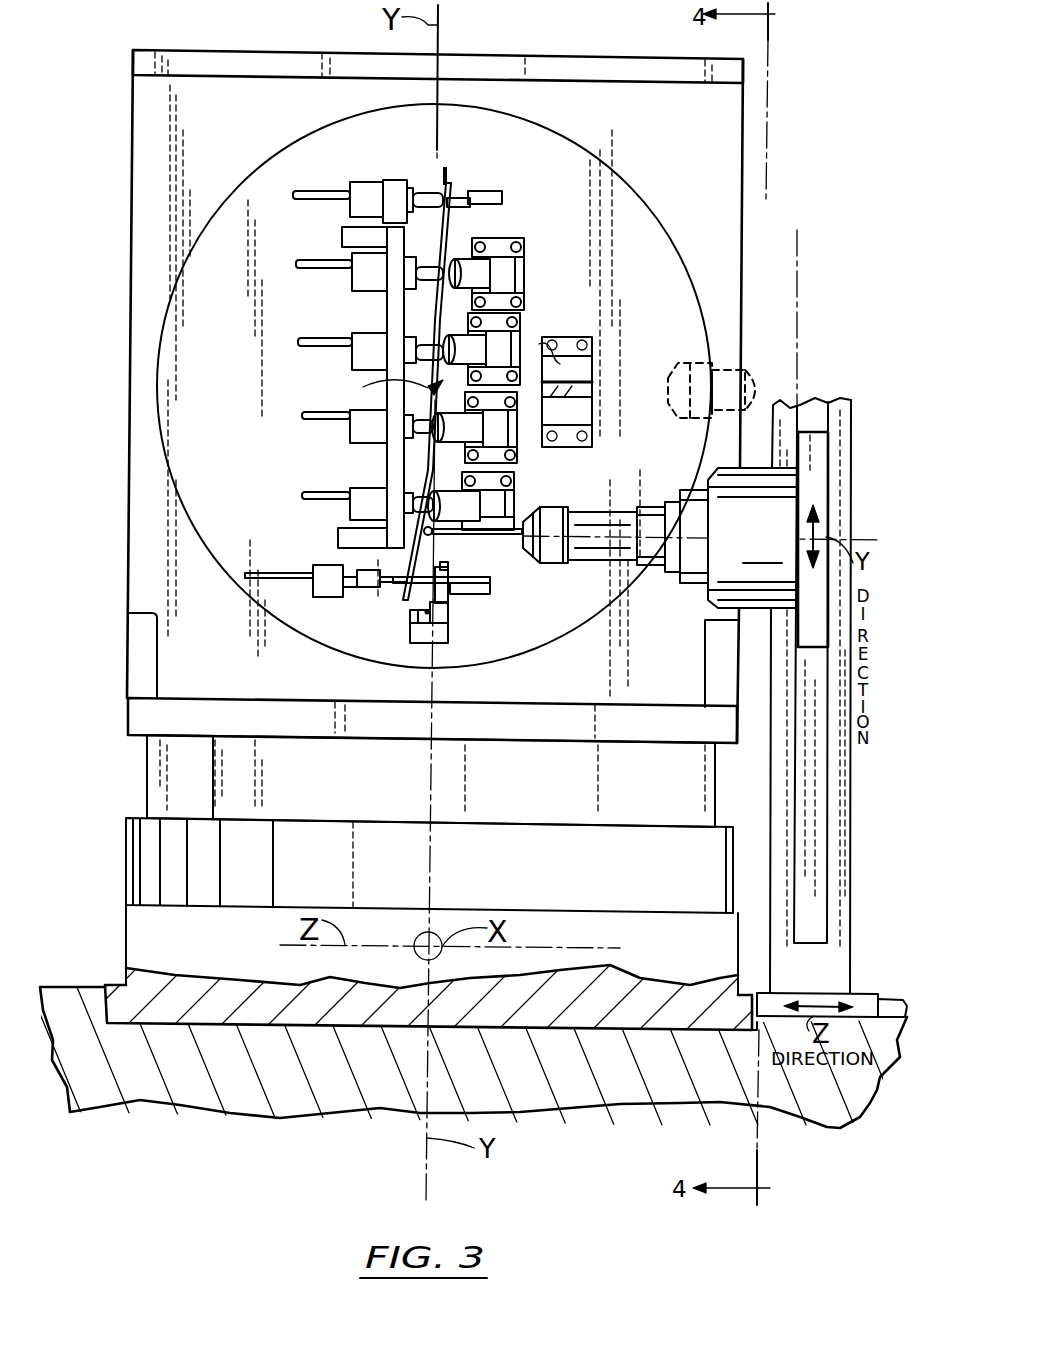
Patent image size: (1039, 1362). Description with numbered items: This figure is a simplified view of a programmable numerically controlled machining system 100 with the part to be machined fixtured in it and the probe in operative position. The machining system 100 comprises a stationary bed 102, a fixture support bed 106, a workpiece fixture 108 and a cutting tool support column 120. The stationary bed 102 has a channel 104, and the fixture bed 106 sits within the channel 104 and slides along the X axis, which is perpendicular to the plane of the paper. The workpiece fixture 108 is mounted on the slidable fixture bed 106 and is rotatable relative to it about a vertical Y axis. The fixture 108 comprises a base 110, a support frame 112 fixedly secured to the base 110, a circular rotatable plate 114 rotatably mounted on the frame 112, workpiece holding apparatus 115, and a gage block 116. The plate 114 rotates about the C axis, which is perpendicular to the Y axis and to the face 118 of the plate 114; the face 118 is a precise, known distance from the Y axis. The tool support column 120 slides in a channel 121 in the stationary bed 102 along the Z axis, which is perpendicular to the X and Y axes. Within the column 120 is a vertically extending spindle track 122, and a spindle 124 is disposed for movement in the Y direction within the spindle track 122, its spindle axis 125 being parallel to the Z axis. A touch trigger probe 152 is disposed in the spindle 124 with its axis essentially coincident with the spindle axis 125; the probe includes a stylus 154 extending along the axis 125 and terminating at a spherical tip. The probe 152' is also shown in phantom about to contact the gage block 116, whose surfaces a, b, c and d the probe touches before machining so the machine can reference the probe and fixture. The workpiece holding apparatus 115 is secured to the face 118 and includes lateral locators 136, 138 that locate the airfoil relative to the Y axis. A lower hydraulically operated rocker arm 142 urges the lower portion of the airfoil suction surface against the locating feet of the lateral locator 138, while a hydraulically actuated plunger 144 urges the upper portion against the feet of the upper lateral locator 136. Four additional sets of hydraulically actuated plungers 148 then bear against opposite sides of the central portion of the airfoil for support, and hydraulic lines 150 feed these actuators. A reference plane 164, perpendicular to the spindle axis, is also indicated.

The machining system 100 is at (195, 35).
The stationary bed 102 is at (107, 1100).
The channel 104 is at (113, 983).
The fixture support bed 106 is at (208, 947).
The workpiece fixture 108 is at (145, 756).
The base 110 is at (128, 830).
The support frame 112 is at (128, 410).
The rotatable plate 114 is at (168, 322).
The workpiece holding apparatus 115 is at (333, 229).
The gage block 116 is at (575, 312).
The face of the plate 118 is at (243, 393).
The cutting tool support column 120 is at (772, 737).
The channel 121 is at (886, 1000).
The spindle track 122 is at (803, 413).
The spindle 124 is at (778, 528).
The spindle axis 125 is at (745, 540).
The upper lateral locator 136 is at (462, 188).
The lower lateral locator 138 is at (446, 593).
The rocker arm 142 is at (407, 583).
The plunger 144 is at (428, 190).
The plungers 148 is at (467, 268).
The hydraulic lines 150 is at (322, 192).
The probe 152 is at (701, 562).
The spindle tool (phantom position) 152' is at (691, 367).
The stylus 154 is at (447, 537).
The reference plane 164 is at (797, 277).